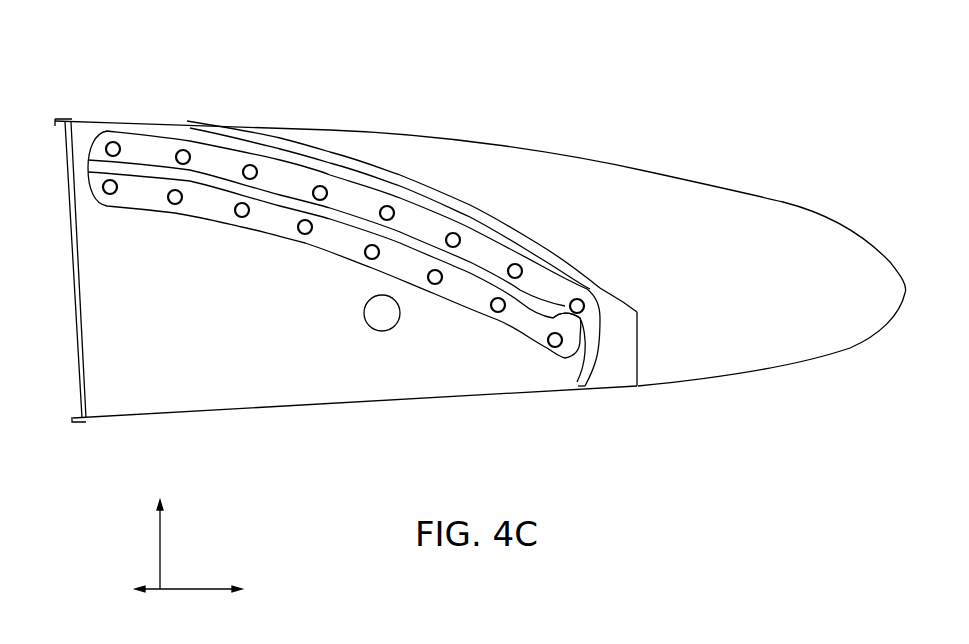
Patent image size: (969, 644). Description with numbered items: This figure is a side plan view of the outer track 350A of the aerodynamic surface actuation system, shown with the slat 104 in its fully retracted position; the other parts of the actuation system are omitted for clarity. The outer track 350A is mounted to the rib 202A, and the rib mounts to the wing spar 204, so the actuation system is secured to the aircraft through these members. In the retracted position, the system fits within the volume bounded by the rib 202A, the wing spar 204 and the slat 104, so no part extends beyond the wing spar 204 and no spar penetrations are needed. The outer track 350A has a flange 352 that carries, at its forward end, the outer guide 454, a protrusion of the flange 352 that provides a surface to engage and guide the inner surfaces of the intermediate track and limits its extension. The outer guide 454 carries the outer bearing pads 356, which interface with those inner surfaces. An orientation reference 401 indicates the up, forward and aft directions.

The slat 104 is at (783, 202).
The wing spar 204 is at (65, 121).
The rib 202A is at (148, 420).
The outer track 350A is at (175, 118).
The flange 352 is at (207, 190).
The outer guide 454 is at (547, 320).
The outer bearing pads 356 is at (577, 382).
The coordinate system 401 is at (183, 566).